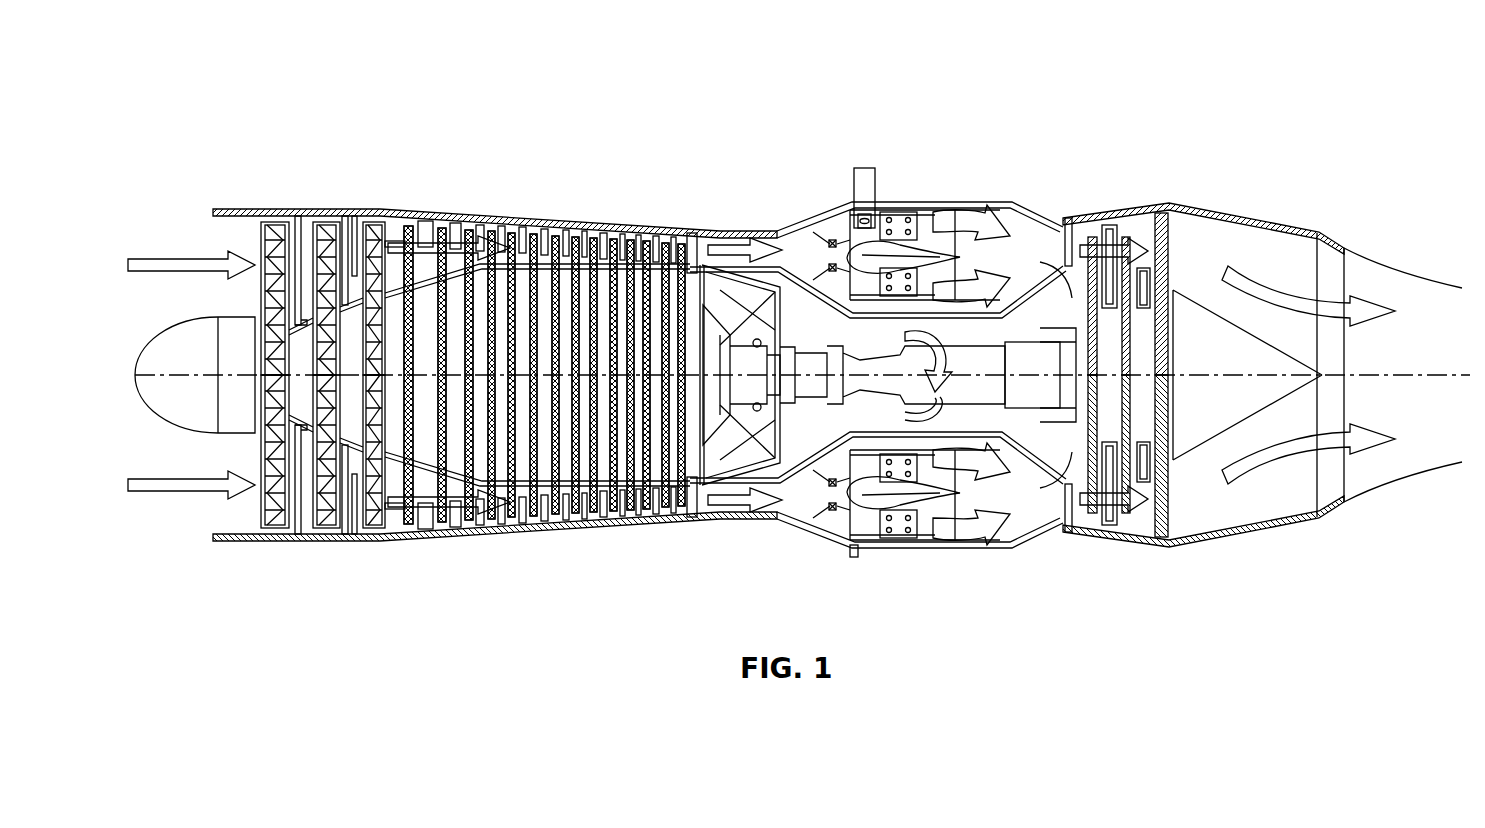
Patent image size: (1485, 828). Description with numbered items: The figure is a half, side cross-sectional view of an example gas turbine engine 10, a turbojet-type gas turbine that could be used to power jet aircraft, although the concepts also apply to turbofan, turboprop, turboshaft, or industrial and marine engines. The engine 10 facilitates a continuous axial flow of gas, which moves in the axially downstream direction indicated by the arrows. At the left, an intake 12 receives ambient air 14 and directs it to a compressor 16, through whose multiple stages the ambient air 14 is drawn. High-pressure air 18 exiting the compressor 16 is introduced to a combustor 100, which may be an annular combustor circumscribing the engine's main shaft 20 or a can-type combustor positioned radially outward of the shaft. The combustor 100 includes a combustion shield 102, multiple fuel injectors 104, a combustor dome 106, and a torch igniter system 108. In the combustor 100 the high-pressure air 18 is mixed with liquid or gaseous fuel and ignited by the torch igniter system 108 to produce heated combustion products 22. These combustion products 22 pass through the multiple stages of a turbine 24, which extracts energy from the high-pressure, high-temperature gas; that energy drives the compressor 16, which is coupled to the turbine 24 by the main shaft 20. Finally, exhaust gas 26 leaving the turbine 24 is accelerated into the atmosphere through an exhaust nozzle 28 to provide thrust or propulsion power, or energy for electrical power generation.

The gas turbine engine 10 is at (233, 108).
The intake 12 is at (232, 208).
The ambient air 14 is at (192, 258).
The compressor 16 is at (366, 204).
The high-pressure air 18 is at (738, 246).
The main shaft 20 is at (990, 372).
The combustion products 22 is at (1098, 245).
The turbine 24 is at (1116, 206).
The exhaust gas 26 is at (1352, 305).
The exhaust nozzle 28 is at (1326, 513).
The combustor 100 is at (930, 199).
The combustion shield 102 is at (1035, 515).
The fuel injectors 104 is at (838, 522).
The combustor dome 106 is at (845, 530).
The torch igniter system 108 is at (846, 182).